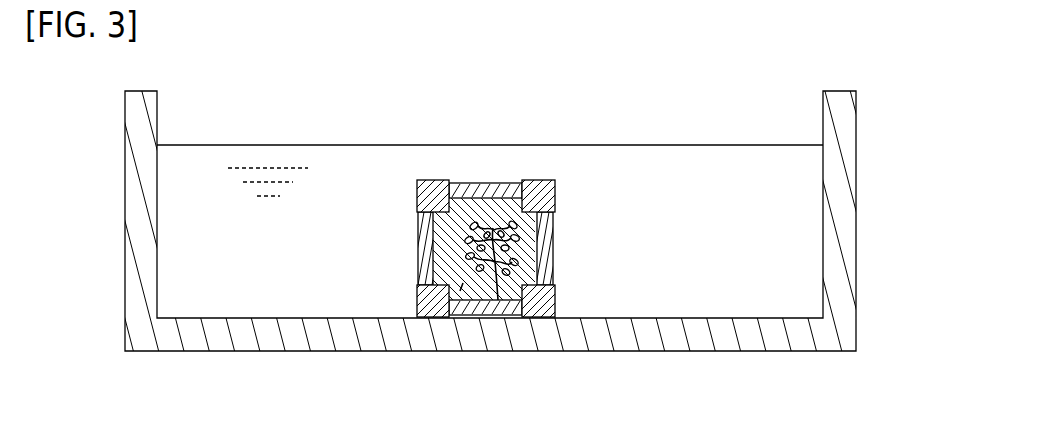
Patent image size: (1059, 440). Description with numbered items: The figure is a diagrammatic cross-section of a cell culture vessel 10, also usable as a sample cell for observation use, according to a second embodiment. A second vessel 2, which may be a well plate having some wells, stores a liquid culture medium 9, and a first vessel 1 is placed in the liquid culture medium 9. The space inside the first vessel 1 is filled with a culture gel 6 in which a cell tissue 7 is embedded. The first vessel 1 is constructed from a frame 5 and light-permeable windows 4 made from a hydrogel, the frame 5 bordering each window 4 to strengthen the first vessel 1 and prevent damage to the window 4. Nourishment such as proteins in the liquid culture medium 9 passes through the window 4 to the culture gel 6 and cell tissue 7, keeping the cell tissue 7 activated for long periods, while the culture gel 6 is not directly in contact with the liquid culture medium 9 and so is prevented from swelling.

The first vessel 1 is at (472, 93).
The second vessel 2 is at (838, 203).
The window 4 is at (472, 184).
The frame 5 is at (431, 184).
The culture gel 6 is at (465, 306).
The cell tissue 7 is at (497, 278).
The liquid culture medium 9 is at (758, 262).
The cell culture vessel 10 is at (842, 58).